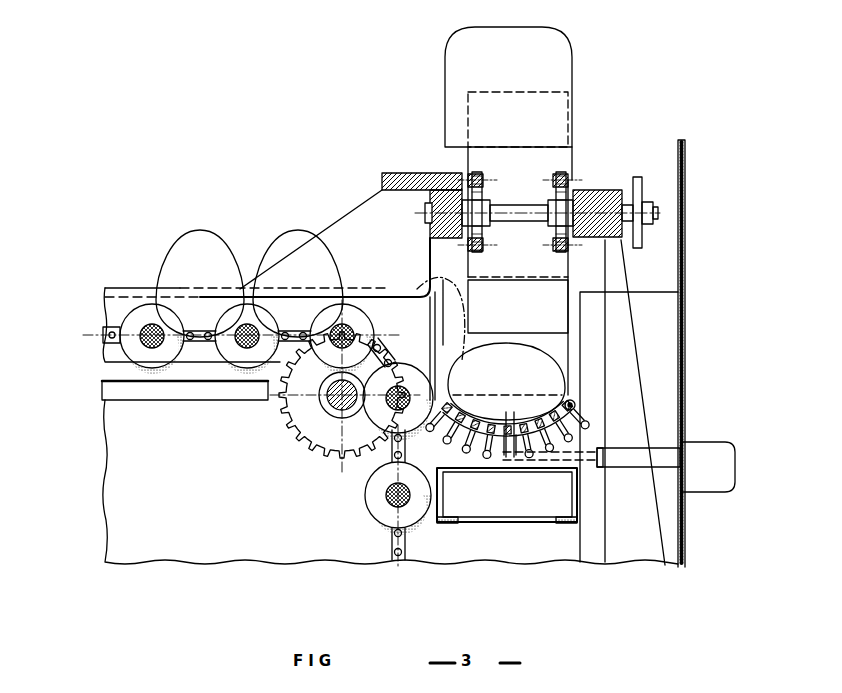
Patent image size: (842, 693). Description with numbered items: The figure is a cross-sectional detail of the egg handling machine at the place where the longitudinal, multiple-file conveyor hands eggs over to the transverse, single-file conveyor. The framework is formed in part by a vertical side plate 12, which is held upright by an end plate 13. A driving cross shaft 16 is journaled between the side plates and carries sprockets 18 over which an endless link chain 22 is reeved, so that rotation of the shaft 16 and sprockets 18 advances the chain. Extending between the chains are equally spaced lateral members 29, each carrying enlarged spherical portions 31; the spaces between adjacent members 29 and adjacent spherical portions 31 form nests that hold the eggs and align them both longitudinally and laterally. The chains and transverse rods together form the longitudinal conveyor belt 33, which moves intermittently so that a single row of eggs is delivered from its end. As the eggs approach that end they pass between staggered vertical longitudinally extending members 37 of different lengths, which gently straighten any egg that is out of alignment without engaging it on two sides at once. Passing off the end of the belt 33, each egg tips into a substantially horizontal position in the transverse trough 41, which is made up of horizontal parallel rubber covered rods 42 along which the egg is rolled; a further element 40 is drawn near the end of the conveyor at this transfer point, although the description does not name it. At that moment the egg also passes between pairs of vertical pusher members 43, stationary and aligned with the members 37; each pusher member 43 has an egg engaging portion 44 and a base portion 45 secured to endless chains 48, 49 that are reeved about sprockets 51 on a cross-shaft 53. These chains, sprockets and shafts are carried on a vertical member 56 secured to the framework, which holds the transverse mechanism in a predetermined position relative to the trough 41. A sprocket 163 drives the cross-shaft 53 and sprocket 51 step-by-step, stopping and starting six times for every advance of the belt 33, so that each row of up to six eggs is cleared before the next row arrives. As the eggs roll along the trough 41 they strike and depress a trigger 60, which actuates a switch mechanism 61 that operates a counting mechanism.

The side plate 12 is at (163, 553).
The end plate 13 is at (687, 272).
The cross shaft 16 is at (320, 455).
The sprocket 18 is at (305, 430).
The endless link chain 22 is at (297, 328).
The lateral member 29 is at (150, 334).
The spherical portion 31 is at (140, 303).
The longitudinal conveyor belt 33 is at (113, 346).
The vertical longitudinally extending member 37 is at (362, 210).
The transfer roller 40 is at (432, 392).
The transverse trough 41 is at (574, 402).
The rubber covered rod 42 is at (491, 426).
The pusher member 43 is at (565, 71).
The egg engaging portion 44 is at (455, 60).
The base portion 45 is at (542, 152).
The endless chain 48 is at (565, 168).
The endless chain 49 is at (475, 172).
The sprocket 51 is at (553, 190).
The cross-shaft 53 is at (520, 220).
The vertical member 56 is at (628, 357).
The trigger 60 is at (513, 420).
The switch mechanism 61 is at (700, 452).
The sprocket 163 is at (636, 248).